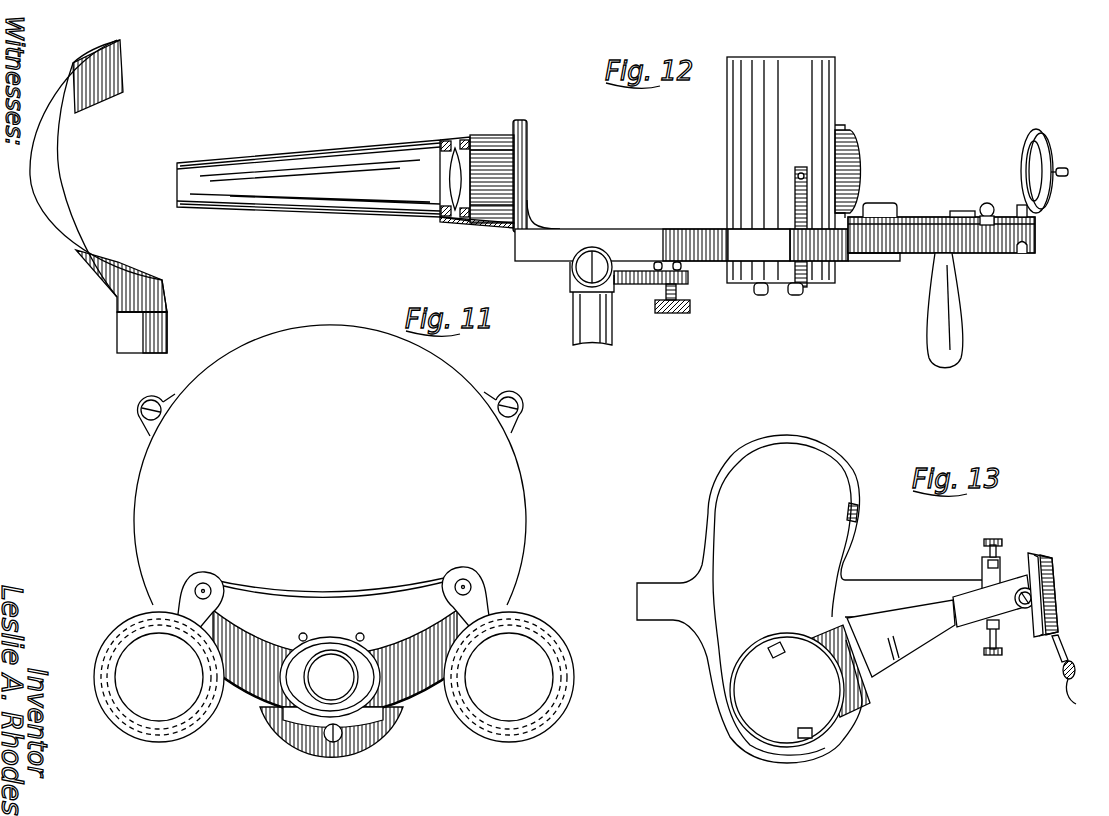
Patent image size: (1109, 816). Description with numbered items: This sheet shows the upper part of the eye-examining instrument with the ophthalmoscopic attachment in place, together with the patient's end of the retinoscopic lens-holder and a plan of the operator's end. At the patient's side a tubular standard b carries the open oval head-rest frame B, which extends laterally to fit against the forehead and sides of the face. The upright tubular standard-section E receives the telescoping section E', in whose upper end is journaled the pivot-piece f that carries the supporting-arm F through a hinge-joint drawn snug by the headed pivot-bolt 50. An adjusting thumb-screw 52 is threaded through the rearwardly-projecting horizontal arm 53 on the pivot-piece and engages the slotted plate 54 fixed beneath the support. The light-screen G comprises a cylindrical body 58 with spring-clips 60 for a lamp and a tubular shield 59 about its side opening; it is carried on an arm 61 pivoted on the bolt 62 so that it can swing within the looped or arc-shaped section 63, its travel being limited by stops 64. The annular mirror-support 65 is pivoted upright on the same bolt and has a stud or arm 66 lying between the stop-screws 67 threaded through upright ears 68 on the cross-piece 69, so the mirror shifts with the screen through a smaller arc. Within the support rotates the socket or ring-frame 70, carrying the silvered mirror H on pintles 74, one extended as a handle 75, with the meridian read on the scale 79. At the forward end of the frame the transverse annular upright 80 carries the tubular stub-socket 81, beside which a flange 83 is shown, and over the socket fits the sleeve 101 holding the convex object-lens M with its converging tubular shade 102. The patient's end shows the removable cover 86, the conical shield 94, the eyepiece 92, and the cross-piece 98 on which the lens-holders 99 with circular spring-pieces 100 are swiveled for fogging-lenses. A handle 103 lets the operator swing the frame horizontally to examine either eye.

In FIG. 12, the headed pivot-bolt 50 is at (600, 249).
In FIG. 12, the adjusting thumb-screw 52 is at (690, 311).
In FIG. 12, the horizontal arm 53 is at (641, 285).
In FIG. 12, the plate 54 is at (681, 268).
In FIG. 12, the cylindrical body 58 is at (836, 82).
In FIG. 13, the cylindrical body 58 is at (734, 683).
In FIG. 12, the tubular shield 59 is at (846, 142).
In FIG. 13, the tubular shield 59 is at (830, 630).
In FIG. 12, the spring-clips 60 is at (795, 297).
In FIG. 13, the spring-clips 60 is at (775, 656).
In FIG. 12, the arm 61 is at (920, 217).
In FIG. 13, the arm 61 is at (925, 640).
In FIG. 12, the bolt 62 is at (1027, 250).
In FIG. 13, the bolt 62 is at (1036, 596).
In FIG. 12, the looped or arc-shaped section 63 is at (759, 245).
In FIG. 13, the looped or arc-shaped section 63 is at (851, 470).
In FIG. 12, the stops 64 is at (878, 203).
In FIG. 13, the stops 64 is at (860, 512).
In FIG. 12, the annular mirror-support 65 is at (1032, 134).
In FIG. 13, the annular mirror-support 65 is at (1033, 556).
In FIG. 12, the stud or arm 66 is at (962, 211).
In FIG. 13, the stud or arm 66 is at (1004, 616).
In FIG. 12, the stop-screws 67 is at (991, 205).
In FIG. 13, the stop-screws 67 is at (996, 544).
In FIG. 12, the upright ears 68 is at (1015, 254).
In FIG. 13, the upright ears 68 is at (986, 563).
In FIG. 13, the cross-piece 69 is at (982, 574).
In FIG. 12, the socket or ring-frame 70 is at (1052, 163).
In FIG. 13, the socket or ring-frame 70 is at (1058, 604).
In FIG. 13, the pintles 74 is at (1063, 640).
In FIG. 12, the handle 75 is at (1065, 178).
In FIG. 13, the handle 75 is at (1085, 699).
In FIG. 13, the scale 79 is at (1041, 562).
In FIG. 12, the transverse annular upright 80 is at (515, 158).
In FIG. 12, the tubular stub-socket 81 is at (500, 184).
In FIG. 12, the flange 83 is at (514, 126).
In FIG. 11, the removable front side or cover 86 is at (330, 465).
In FIG. 11, the eyepiece 92 is at (380, 672).
In FIG. 11, the conical shield 94 is at (375, 740).
In FIG. 11, the cross-piece 98 is at (335, 644).
In FIG. 11, the lens-holders 99 is at (168, 610).
In FIG. 11, the circular spring-pieces 100 is at (108, 640).
In FIG. 12, the tubular frame or sleeve 101 is at (484, 228).
In FIG. 12, the converging tubular shade 102 is at (308, 191).
In FIG. 12, the handle 103 is at (960, 325).
In FIG. 12, the open oval frame B is at (60, 142).
In FIG. 12, the tubular standard b is at (167, 335).
In FIG. 12, the convex object-lens M is at (420, 140).
In FIG. 12, the upright tubular standard-section E is at (681, 225).
In FIG. 12, the tubular section E' is at (571, 318).
In FIG. 12, the pivot-piece f is at (573, 286).
In FIG. 12, the light-screen G is at (753, 206).
In FIG. 13, the light-screen G is at (738, 640).
In FIG. 12, the silvered mirror H is at (1032, 172).
In FIG. 13, the supporting-arm F is at (653, 590).